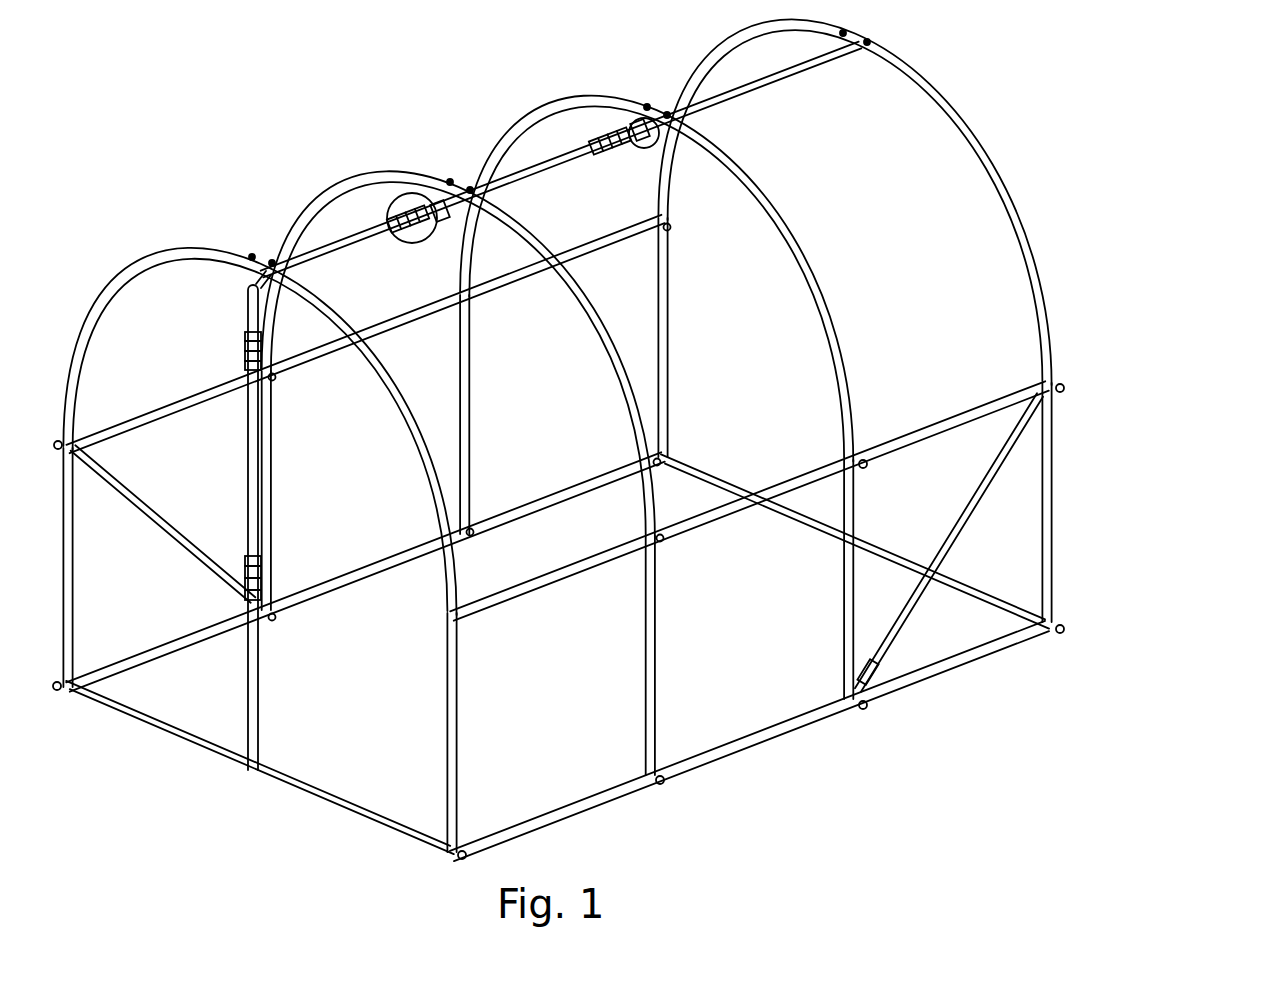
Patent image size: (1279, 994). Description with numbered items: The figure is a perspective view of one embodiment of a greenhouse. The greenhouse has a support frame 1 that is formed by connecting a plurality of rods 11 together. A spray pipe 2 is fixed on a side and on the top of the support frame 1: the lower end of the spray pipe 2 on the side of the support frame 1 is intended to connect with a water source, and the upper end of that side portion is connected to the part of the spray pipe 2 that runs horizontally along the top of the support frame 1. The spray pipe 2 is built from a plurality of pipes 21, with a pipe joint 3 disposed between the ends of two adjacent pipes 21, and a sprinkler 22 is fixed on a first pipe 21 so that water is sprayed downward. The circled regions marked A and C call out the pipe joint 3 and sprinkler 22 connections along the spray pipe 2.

The support frame 1 is at (1058, 307).
The rods 11 is at (1047, 500).
The spray pipe 2 is at (343, 230).
The pipes 21 is at (298, 262).
The sprinkler 22 is at (438, 187).
The pipe joint 3 is at (580, 130).
The detail region A is at (390, 203).
The detail region C is at (632, 125).